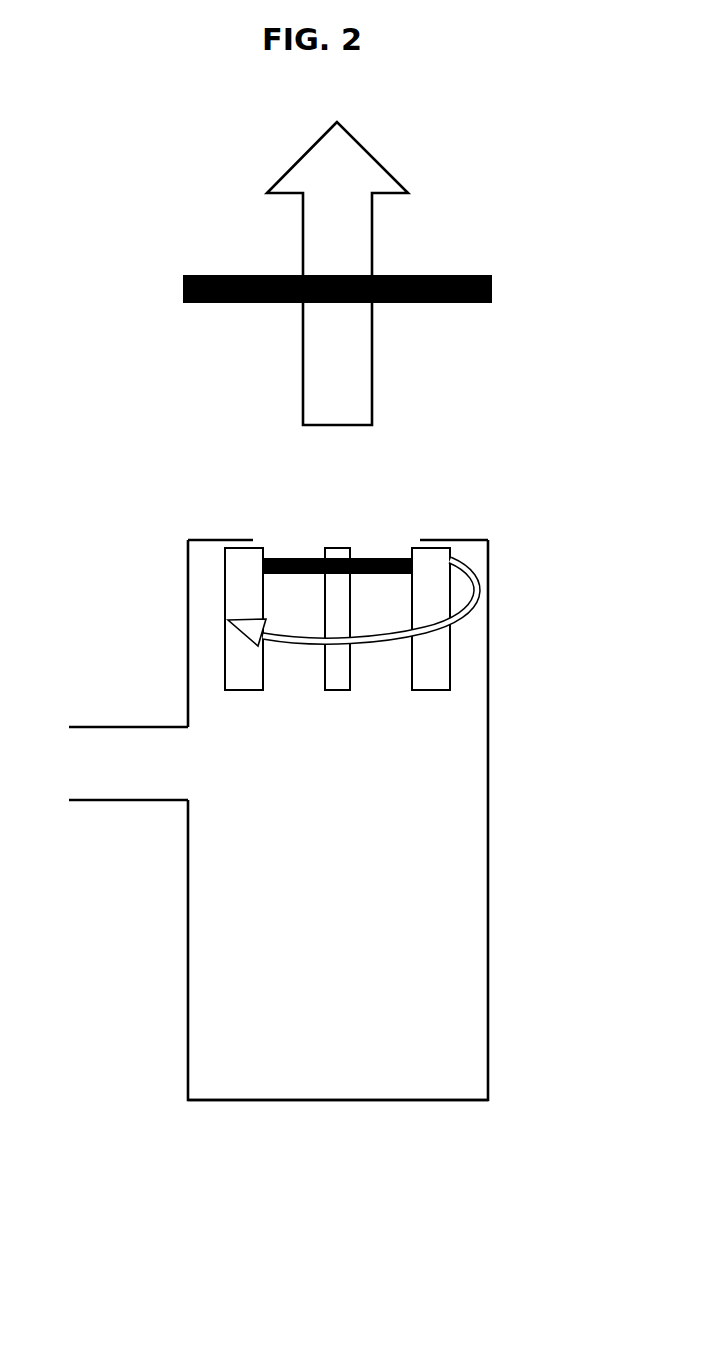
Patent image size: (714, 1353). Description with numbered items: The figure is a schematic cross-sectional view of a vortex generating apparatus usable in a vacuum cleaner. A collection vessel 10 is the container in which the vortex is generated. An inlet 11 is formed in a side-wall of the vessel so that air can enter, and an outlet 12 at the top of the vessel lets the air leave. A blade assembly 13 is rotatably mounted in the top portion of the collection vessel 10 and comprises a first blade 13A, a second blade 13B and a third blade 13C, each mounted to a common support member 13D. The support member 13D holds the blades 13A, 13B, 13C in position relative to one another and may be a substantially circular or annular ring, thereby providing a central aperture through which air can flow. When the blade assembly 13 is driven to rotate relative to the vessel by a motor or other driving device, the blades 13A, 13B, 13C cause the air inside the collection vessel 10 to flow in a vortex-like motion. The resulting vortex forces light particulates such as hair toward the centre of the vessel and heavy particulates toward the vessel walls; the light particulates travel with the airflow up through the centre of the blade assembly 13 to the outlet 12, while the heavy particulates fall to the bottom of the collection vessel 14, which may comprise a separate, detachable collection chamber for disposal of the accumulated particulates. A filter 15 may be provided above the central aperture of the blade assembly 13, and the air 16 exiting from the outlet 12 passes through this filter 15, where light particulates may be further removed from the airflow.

The collection vessel 10 is at (490, 939).
The inlet 11 is at (130, 780).
The outlet 12 is at (388, 547).
The blade assembly 13 is at (378, 626).
The first blade 13A is at (437, 663).
The second blade 13B is at (337, 605).
The third blade 13C is at (228, 568).
The support member 13D is at (297, 557).
The bottom of the collection vessel 14 is at (406, 1073).
The filter 15 is at (492, 290).
The air 16 is at (363, 227).